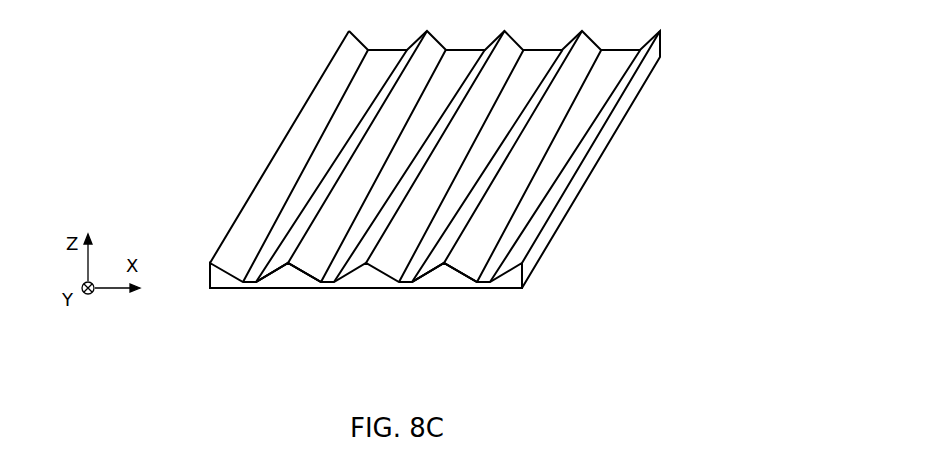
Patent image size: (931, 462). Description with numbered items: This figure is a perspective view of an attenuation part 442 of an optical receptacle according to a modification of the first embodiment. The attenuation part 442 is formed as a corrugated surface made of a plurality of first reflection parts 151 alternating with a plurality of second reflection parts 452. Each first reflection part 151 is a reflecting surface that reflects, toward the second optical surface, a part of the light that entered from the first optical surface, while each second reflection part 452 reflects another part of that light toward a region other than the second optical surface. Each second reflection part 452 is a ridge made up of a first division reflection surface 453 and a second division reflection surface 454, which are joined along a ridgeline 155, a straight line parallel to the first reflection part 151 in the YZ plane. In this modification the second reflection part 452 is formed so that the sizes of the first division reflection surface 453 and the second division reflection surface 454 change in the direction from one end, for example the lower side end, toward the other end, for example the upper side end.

The attenuation part 442 is at (499, 192).
The first reflection part 151 is at (518, 235).
The second reflection part 452 is at (368, 320).
The first division reflection surface 453 is at (480, 273).
The second division reflection surface 454 is at (427, 271).
The ridgeline 155 is at (448, 266).